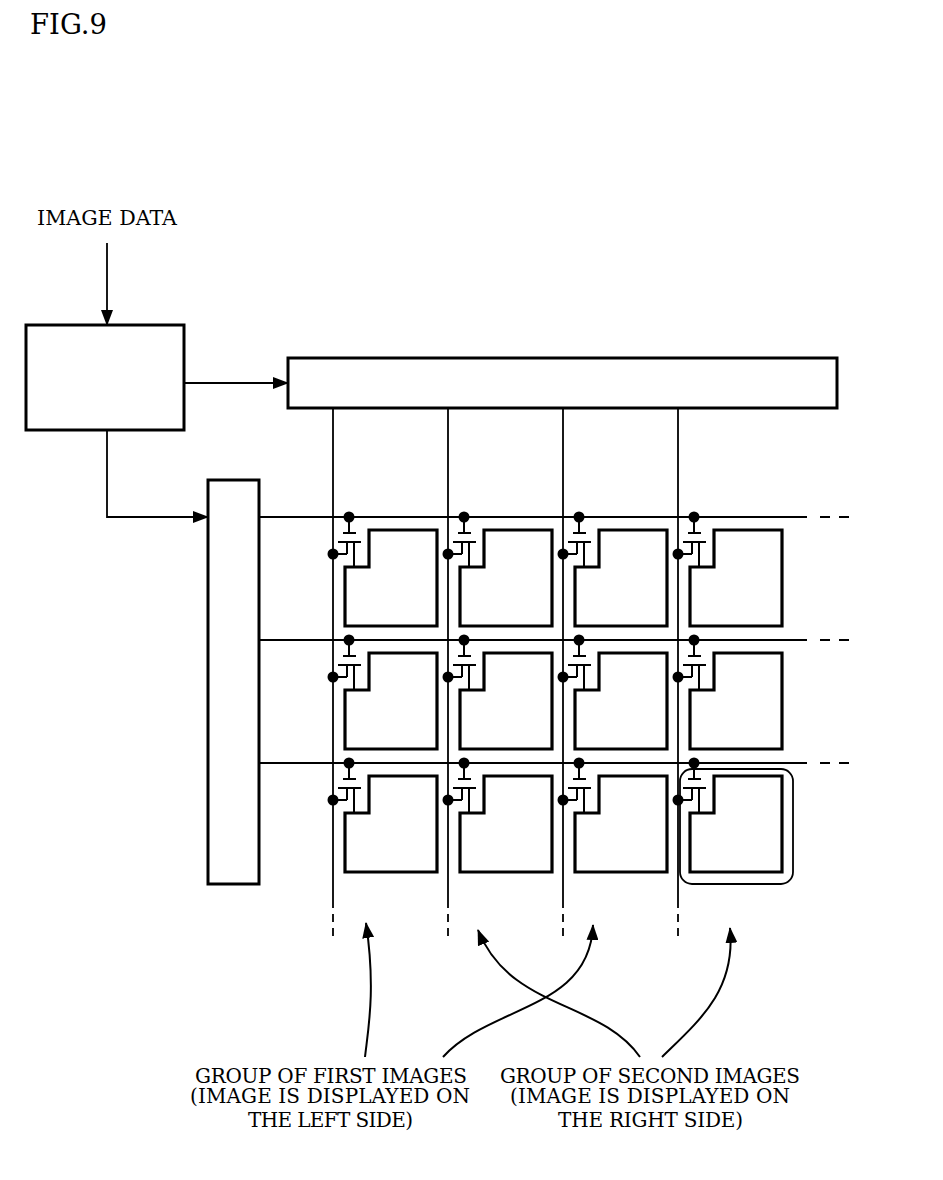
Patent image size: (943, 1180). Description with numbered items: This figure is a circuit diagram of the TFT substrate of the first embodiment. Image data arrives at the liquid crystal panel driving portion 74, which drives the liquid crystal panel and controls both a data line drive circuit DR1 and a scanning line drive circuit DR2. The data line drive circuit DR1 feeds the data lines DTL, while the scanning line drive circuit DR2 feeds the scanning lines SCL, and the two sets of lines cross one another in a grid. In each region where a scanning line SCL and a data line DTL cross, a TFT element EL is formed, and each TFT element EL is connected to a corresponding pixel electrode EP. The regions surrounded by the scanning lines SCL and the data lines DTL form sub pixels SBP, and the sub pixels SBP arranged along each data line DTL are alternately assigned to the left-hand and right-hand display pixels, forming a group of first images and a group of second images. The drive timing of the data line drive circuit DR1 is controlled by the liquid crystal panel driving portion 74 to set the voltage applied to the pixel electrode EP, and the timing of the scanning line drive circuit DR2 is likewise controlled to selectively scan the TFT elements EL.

The liquid crystal panel driving portion 74 is at (160, 324).
The data line drive circuit DR1 is at (447, 358).
The scanning line drive circuit DR2 is at (208, 763).
The scanning lines SCL is at (807, 518).
The data lines DTL is at (330, 881).
The TFT elements EL is at (706, 538).
The pixel electrodes EP is at (772, 597).
The sub pixels SBP is at (767, 884).